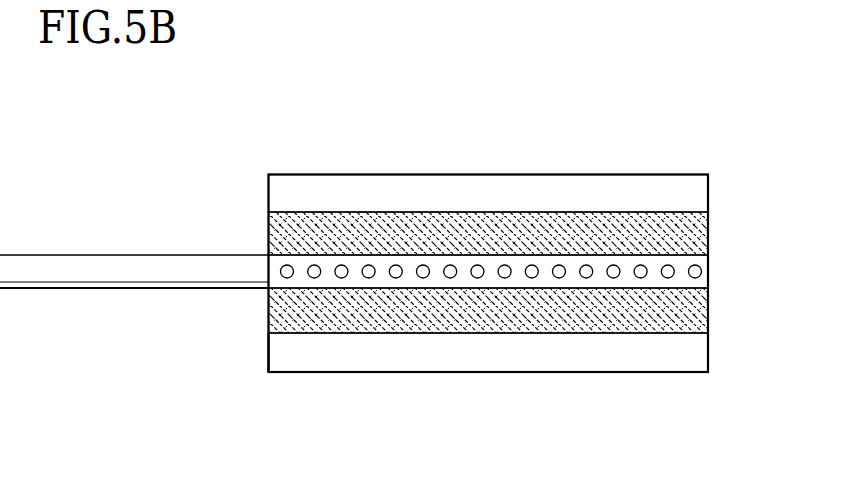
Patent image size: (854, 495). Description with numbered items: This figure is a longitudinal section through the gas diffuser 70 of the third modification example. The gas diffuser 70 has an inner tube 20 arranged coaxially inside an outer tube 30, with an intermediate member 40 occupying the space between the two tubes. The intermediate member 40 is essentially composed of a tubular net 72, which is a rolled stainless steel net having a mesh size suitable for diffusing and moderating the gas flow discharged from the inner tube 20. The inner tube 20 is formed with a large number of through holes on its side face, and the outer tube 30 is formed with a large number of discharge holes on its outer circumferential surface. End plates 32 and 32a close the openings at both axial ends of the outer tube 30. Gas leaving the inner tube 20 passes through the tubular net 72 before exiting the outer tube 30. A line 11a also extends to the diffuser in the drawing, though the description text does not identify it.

The gas diffuser 70 is at (258, 191).
The optical fiber 11a is at (62, 256).
The tubular net 72 is at (603, 212).
The intermediate member 40 is at (505, 181).
The inner tube 20 is at (683, 259).
The end plate 32 is at (708, 353).
The end plate 32a is at (268, 353).
The outer tube 30 is at (662, 373).